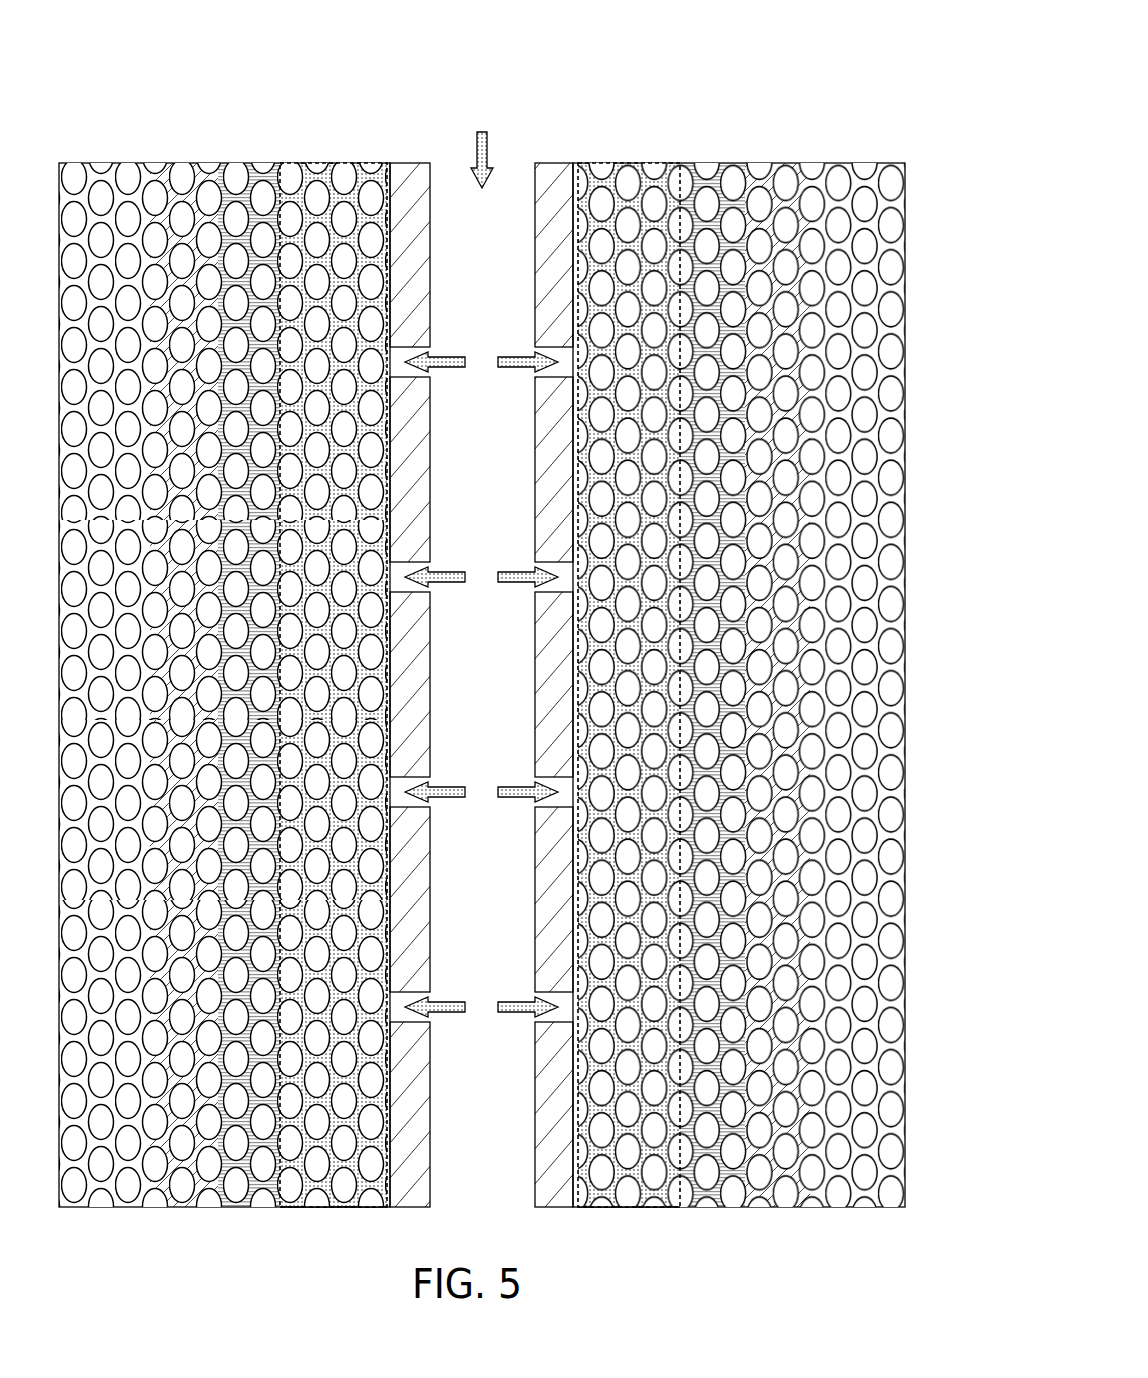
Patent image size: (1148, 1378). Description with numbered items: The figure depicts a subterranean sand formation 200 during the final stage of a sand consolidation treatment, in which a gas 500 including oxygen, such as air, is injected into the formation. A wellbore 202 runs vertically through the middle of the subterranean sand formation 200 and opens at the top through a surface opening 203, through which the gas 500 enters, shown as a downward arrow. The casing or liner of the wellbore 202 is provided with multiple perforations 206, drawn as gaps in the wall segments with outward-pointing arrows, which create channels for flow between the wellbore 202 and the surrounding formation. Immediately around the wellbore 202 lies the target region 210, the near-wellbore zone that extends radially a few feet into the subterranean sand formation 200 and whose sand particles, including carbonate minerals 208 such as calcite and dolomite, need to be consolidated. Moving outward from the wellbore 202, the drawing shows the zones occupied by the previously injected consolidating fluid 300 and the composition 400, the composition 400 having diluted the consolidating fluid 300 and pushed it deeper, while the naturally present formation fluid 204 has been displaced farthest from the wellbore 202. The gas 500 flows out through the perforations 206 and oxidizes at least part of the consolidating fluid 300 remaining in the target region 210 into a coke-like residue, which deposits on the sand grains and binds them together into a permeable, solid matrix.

The subterranean sand formation 200 is at (501, 611).
The wellbore 202 is at (503, 482).
The surface opening 203 is at (512, 162).
The formation fluid 204 is at (87, 178).
The perforations 206 is at (545, 350).
The carbonate minerals 208 is at (320, 180).
The target region 210 is at (612, 1168).
The consolidating fluid 300 is at (170, 180).
The composition 400 is at (250, 175).
The gas 500 is at (312, 172).